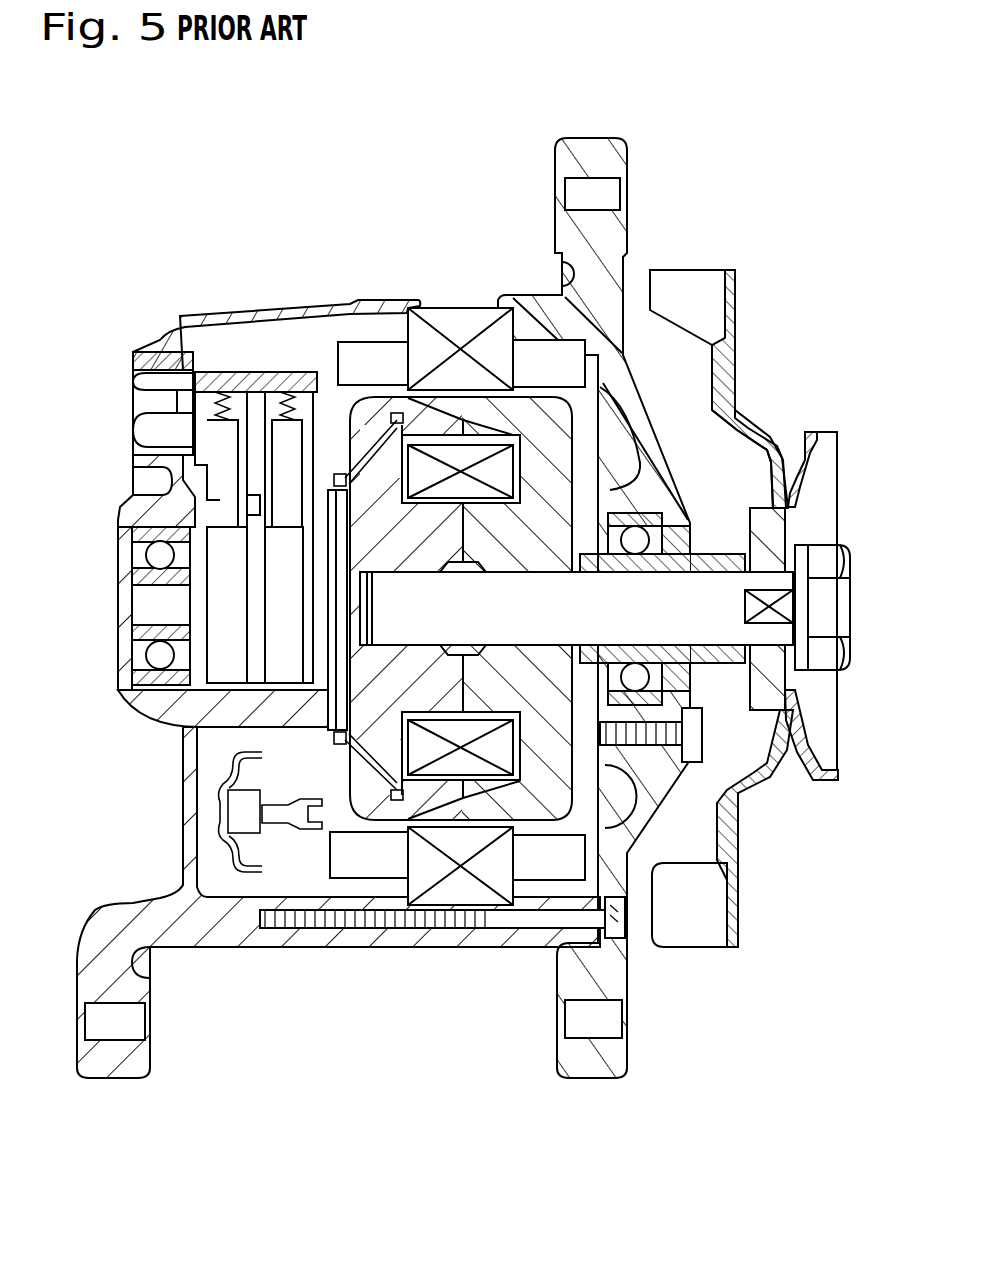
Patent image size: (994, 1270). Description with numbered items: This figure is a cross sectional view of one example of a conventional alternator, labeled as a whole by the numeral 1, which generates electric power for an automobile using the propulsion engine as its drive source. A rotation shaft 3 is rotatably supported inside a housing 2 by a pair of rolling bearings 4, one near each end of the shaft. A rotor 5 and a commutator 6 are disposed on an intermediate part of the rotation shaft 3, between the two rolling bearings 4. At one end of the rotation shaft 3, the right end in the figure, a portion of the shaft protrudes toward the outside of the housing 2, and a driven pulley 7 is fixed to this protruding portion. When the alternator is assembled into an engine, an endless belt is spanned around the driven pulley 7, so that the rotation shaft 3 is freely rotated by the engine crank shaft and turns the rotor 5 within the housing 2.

The vehicle AC generator (housing/brackets) 1 is at (648, 207).
The housing 2 is at (370, 940).
The rotation shaft 3 is at (712, 582).
The rolling bearings 4 is at (150, 527).
The rotor 5 is at (385, 810).
The commutator 6 is at (217, 602).
The driven pulley 7 is at (805, 500).